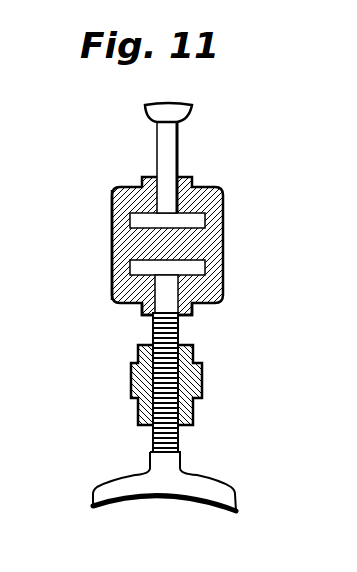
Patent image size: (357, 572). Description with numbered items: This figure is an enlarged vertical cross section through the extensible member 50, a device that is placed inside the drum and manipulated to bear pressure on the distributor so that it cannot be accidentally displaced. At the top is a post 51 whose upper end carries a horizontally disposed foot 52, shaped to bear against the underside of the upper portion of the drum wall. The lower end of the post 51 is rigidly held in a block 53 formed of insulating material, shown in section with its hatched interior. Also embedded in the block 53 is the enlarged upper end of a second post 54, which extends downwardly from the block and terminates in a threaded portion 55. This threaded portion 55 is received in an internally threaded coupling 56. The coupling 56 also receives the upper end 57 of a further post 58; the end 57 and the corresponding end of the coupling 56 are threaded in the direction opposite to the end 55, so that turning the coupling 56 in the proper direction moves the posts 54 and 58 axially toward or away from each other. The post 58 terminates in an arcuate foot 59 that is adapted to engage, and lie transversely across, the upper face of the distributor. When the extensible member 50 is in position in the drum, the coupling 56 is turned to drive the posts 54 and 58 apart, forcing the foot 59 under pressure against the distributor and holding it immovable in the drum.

The extensible member 50 is at (112, 240).
The post 51 is at (176, 140).
The foot 52 is at (148, 110).
The block 53 is at (225, 208).
The post 54 is at (188, 320).
The threaded portion 55 is at (150, 326).
The coupling 56 is at (205, 372).
The upper end 57 is at (150, 440).
The post 58 is at (178, 464).
The arcuate foot 59 is at (165, 482).